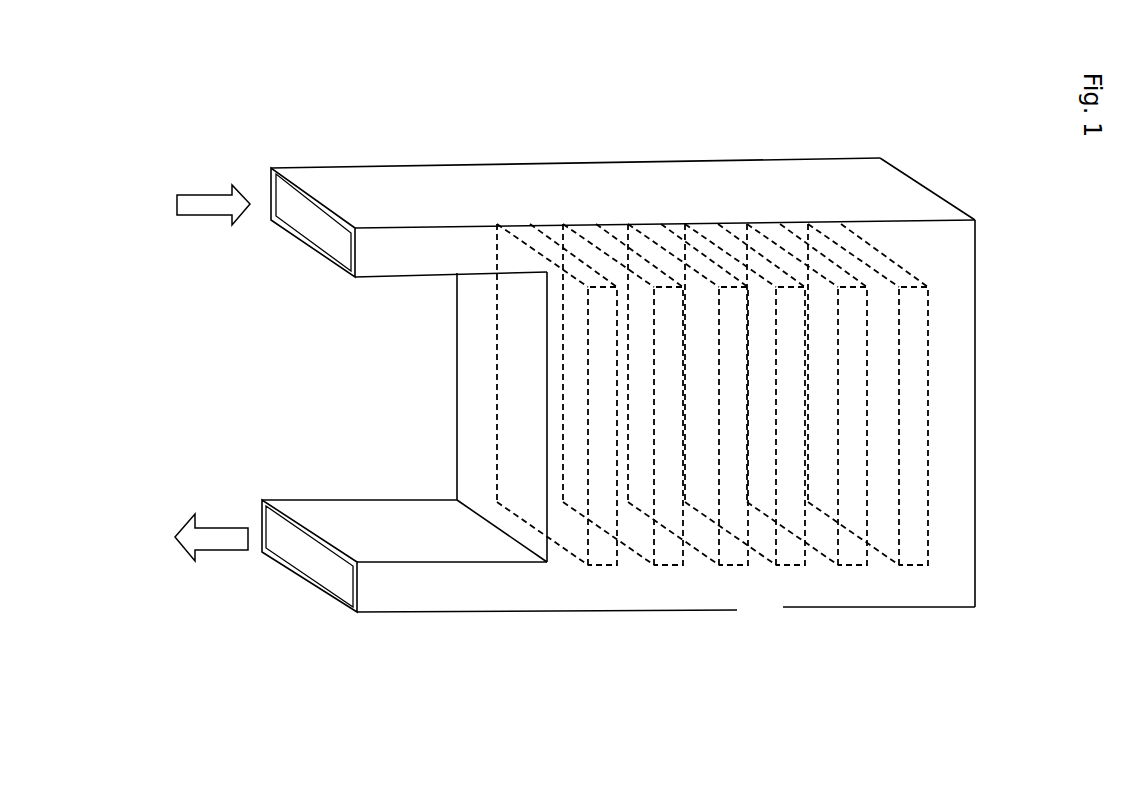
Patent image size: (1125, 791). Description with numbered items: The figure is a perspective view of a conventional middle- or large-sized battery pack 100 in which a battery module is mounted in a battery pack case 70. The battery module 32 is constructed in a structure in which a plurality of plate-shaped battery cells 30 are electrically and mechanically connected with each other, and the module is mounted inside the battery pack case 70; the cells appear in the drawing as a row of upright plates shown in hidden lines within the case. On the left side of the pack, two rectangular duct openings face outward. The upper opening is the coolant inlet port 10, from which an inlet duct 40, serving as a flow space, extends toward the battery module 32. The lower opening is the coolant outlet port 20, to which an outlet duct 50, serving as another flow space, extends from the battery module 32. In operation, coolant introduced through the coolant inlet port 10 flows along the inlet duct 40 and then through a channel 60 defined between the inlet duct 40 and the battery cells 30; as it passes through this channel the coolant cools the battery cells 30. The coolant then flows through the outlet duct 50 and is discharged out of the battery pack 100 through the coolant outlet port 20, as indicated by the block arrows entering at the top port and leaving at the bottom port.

The middle- or large-sized battery pack 100 is at (255, 92).
The coolant inlet port 10 is at (312, 228).
The coolant outlet port 20 is at (303, 558).
The plate-shaped battery cells 30 is at (917, 458).
The battery module 32 is at (927, 573).
The inlet duct 40 is at (438, 252).
The outlet duct 50 is at (428, 593).
The channel 60 is at (876, 290).
The battery pack case 70 is at (617, 162).